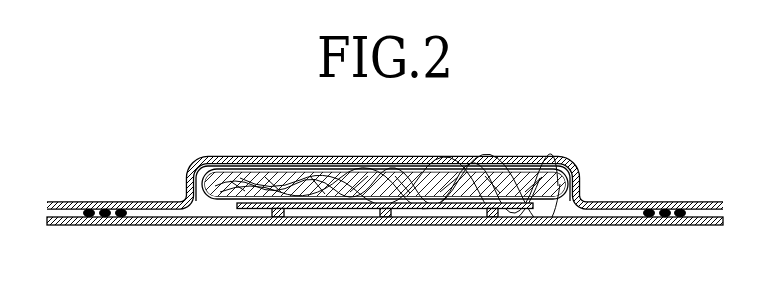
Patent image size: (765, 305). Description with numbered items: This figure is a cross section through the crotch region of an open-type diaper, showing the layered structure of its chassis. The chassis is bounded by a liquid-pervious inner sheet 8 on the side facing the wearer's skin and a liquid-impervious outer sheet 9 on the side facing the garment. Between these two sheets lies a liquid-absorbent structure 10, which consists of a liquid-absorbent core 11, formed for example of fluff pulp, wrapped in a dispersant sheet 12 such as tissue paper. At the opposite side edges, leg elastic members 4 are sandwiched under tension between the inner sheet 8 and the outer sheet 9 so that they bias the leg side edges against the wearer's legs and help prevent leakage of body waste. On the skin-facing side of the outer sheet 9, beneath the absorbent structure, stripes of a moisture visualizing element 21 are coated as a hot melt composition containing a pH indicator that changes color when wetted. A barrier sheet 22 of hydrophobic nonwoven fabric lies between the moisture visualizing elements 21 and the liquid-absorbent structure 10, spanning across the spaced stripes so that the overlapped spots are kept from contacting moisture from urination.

The leg elastic members 4 is at (121, 209).
The inner sheet 8 is at (552, 161).
The outer sheet 9 is at (579, 226).
The liquid-absorbent structure 10 is at (458, 172).
The liquid-absorbent core 11 is at (322, 178).
The dispersant sheet 12 is at (242, 170).
The moisture visualizing element 21 is at (386, 218).
The barrier sheet 22 is at (505, 209).